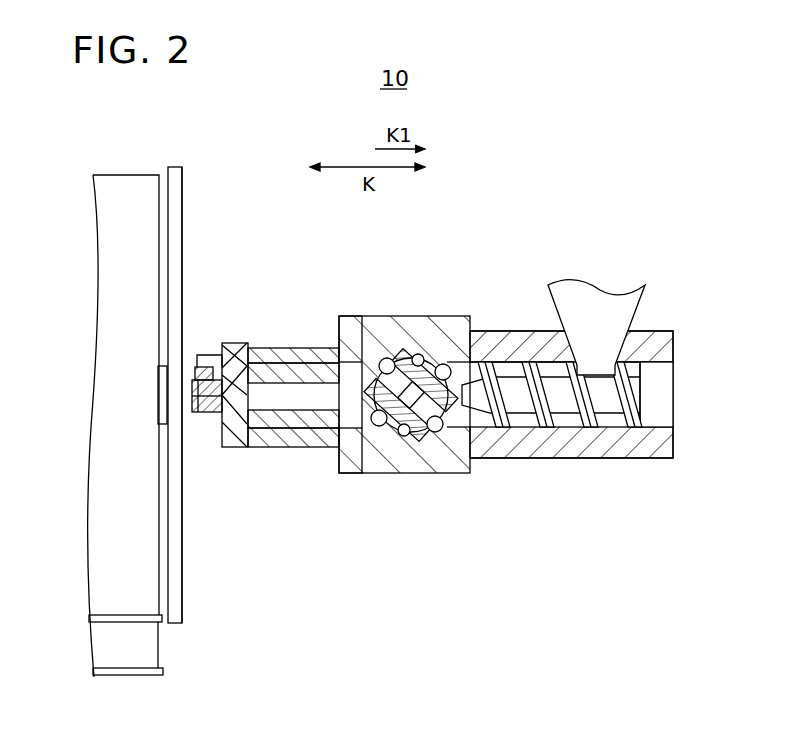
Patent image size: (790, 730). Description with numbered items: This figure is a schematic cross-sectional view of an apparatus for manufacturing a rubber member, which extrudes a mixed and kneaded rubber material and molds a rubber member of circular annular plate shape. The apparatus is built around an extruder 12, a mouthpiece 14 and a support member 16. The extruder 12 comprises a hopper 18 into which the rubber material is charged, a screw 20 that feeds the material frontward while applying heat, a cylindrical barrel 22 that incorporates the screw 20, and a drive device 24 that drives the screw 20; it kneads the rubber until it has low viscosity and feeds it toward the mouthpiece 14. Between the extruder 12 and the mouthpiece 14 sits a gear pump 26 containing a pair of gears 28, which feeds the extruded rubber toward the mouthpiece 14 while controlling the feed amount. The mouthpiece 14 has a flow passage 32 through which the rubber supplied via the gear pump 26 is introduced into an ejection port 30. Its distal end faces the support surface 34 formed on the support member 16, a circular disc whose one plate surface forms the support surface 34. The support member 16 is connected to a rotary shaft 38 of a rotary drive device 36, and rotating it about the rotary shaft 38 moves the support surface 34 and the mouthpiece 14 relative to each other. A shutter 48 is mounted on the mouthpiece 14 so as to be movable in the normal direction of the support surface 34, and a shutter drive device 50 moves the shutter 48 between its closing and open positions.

The extruder 12 is at (507, 328).
The mouthpiece 14 is at (242, 452).
The support member 16 is at (189, 174).
The hopper 18 is at (573, 296).
The screw 20 is at (523, 403).
The barrel 22 is at (583, 450).
The drive device 24 is at (657, 408).
The gear pump 26 is at (400, 312).
The gears 28 is at (427, 340).
The ejection port 30 is at (246, 383).
The flow passage 32 is at (207, 413).
The support surface 34 is at (183, 277).
The rotary drive device 36 is at (120, 238).
The rotary shaft 38 is at (164, 385).
The shutter 48 is at (195, 366).
The shutter drive device 50 is at (210, 356).